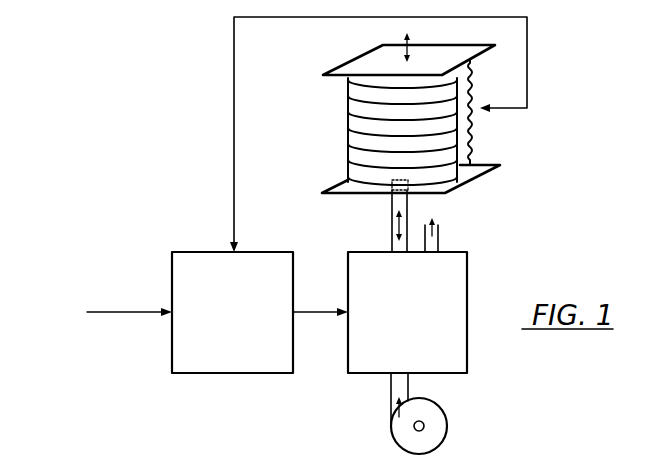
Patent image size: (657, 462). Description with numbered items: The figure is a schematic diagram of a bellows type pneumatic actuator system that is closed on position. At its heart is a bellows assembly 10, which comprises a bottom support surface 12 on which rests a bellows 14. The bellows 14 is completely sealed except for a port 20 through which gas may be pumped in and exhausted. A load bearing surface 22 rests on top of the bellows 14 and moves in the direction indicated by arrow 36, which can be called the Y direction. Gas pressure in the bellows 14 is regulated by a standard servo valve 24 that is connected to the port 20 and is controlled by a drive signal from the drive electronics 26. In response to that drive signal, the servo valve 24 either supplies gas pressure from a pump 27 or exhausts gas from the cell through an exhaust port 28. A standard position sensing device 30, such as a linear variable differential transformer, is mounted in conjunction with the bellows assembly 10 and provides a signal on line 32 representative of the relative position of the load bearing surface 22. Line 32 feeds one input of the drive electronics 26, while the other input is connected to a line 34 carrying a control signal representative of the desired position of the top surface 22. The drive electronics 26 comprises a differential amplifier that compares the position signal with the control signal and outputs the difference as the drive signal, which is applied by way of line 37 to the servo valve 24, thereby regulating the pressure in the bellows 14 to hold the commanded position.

The bellows assembly 10 is at (330, 61).
The bottom support surface 12 is at (336, 189).
The bellows 14 is at (348, 112).
The port 20 is at (402, 181).
The load bearing surface 22 is at (474, 45).
The servo valve 24 is at (470, 272).
The drive electronics 26 is at (227, 374).
The pump 27 is at (450, 427).
The exhaust port 28 is at (440, 236).
The position sensing device 30 is at (475, 133).
The line 32 is at (234, 101).
The line 34 is at (128, 313).
The arrow 36 is at (410, 45).
The line 37 is at (322, 318).